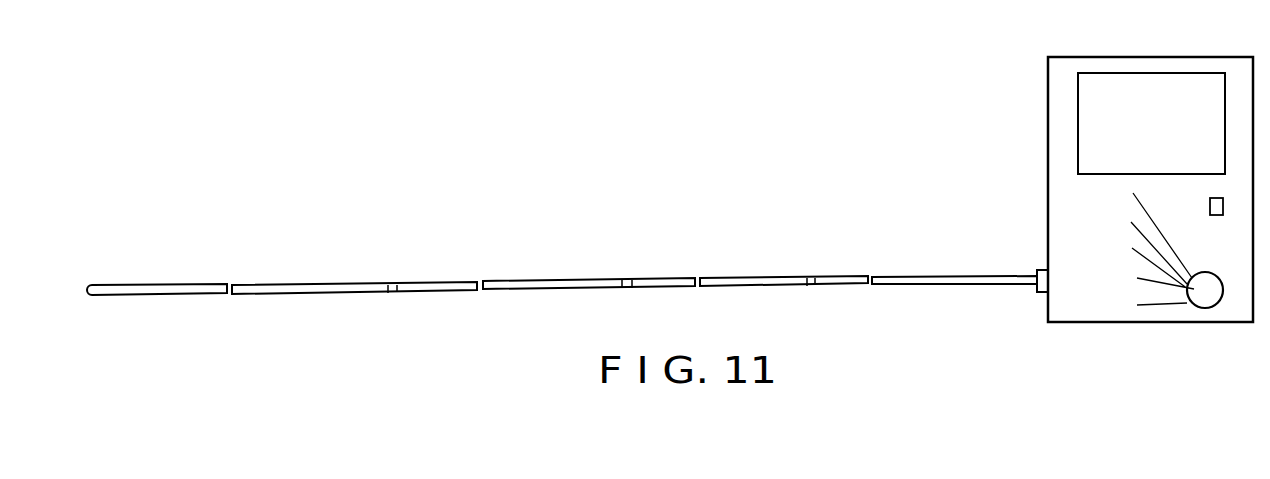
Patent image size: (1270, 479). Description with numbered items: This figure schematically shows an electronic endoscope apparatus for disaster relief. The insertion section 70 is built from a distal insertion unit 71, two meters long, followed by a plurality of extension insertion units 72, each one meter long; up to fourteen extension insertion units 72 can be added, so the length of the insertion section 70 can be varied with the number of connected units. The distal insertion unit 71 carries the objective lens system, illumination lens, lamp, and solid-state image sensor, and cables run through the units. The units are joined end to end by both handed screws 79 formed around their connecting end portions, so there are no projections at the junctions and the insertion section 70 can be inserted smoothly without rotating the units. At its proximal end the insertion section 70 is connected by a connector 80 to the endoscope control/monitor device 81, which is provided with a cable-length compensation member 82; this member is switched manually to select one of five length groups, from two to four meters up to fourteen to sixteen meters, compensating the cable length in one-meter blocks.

The insertion section 70 is at (522, 270).
The distal insertion unit 71 is at (296, 283).
The extension insertion units 72 is at (551, 290).
The both handed screws 79 is at (393, 283).
The connector 80 is at (1040, 270).
The endoscope control/monitor device 81 is at (1128, 57).
The cable-length compensation member 82 is at (1210, 308).